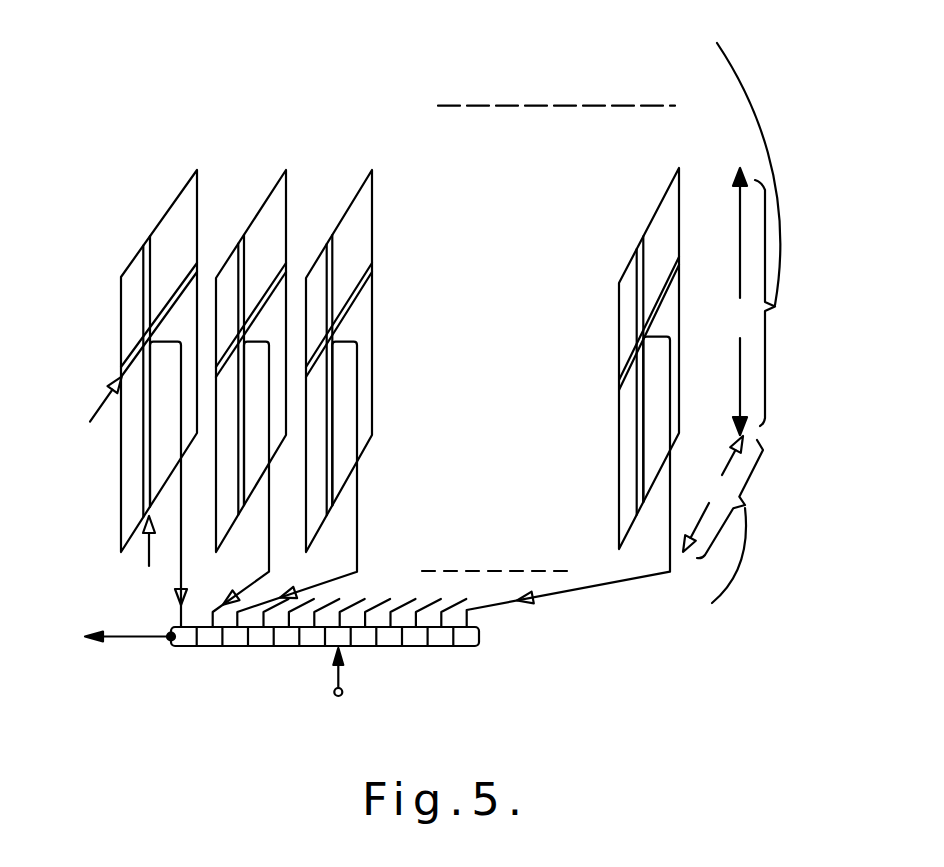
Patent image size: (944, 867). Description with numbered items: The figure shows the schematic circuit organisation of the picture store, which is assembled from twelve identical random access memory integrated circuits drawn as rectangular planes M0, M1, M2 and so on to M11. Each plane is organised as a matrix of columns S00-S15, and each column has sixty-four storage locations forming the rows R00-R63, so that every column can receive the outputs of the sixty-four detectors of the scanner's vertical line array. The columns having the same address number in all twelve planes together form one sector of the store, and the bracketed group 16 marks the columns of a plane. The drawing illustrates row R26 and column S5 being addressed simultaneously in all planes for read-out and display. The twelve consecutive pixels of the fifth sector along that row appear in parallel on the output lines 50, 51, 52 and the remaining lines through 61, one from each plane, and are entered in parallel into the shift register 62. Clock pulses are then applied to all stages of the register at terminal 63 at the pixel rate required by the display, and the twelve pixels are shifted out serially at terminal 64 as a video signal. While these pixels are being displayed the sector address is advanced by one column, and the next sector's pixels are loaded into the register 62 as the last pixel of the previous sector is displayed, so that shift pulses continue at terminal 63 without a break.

The RAM store plane M0 is at (195, 170).
The RAM store plane M1 is at (286, 170).
The RAM store plane M2 is at (370, 170).
The RAM store plane M11 is at (671, 319).
The output line 50 is at (181, 571).
The output line 51 is at (270, 546).
The output line 52 is at (357, 547).
The output line 61 is at (568, 482).
The shift register 62 is at (239, 647).
The clock terminal 63 is at (342, 694).
The output terminal 64 is at (123, 638).
The column count 16 is at (723, 497).
The column S5 is at (150, 560).
The row R26 is at (89, 416).
The rows R00 to R63 R00-R63 is at (685, 160).
The columns S00 to S15 S00-S15 is at (706, 574).